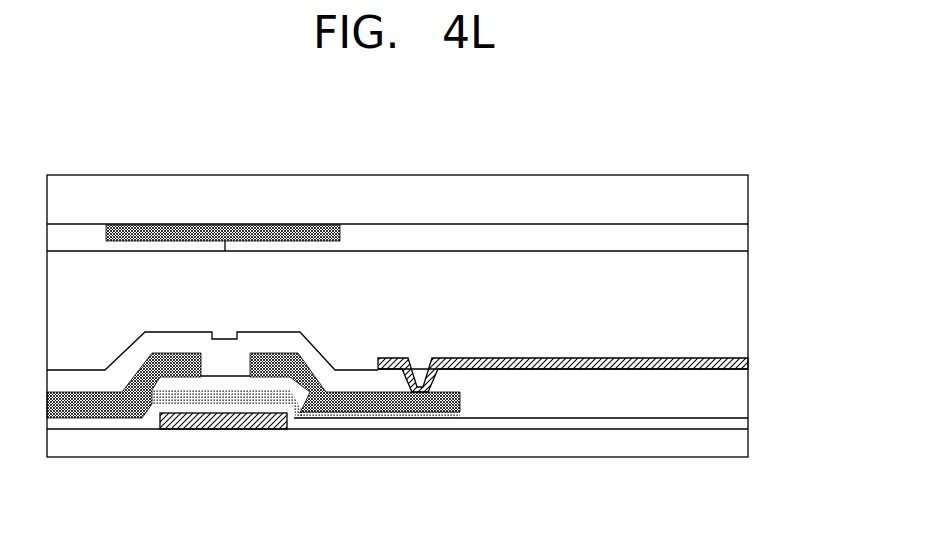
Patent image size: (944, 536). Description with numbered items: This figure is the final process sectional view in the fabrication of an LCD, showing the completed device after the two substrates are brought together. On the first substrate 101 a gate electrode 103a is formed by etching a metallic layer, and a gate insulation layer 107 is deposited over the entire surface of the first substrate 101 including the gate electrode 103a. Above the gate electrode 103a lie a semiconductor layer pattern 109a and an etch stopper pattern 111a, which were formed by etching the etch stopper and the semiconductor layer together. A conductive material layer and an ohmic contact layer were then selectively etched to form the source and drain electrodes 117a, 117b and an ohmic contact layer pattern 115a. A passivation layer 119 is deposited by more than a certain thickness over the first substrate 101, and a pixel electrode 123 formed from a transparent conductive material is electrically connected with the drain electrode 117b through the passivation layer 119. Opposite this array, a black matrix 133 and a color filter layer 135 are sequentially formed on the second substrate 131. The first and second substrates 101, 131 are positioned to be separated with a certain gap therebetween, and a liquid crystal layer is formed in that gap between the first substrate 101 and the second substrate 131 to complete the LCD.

The first substrate 101 is at (726, 447).
The gate electrode 103a is at (173, 424).
The gate insulation layer 107 is at (726, 424).
The semiconductor layer pattern 109a is at (227, 399).
The etch stopper pattern 111a is at (278, 383).
The ohmic contact layer pattern 115a is at (431, 415).
The source electrode 117a is at (93, 420).
The drain electrode 117b is at (378, 416).
The passivation layer 119 is at (726, 388).
The pixel electrode 123 is at (726, 362).
The second substrate 131 is at (726, 197).
The black matrix 133 is at (203, 224).
The color filter layer 135 is at (726, 237).